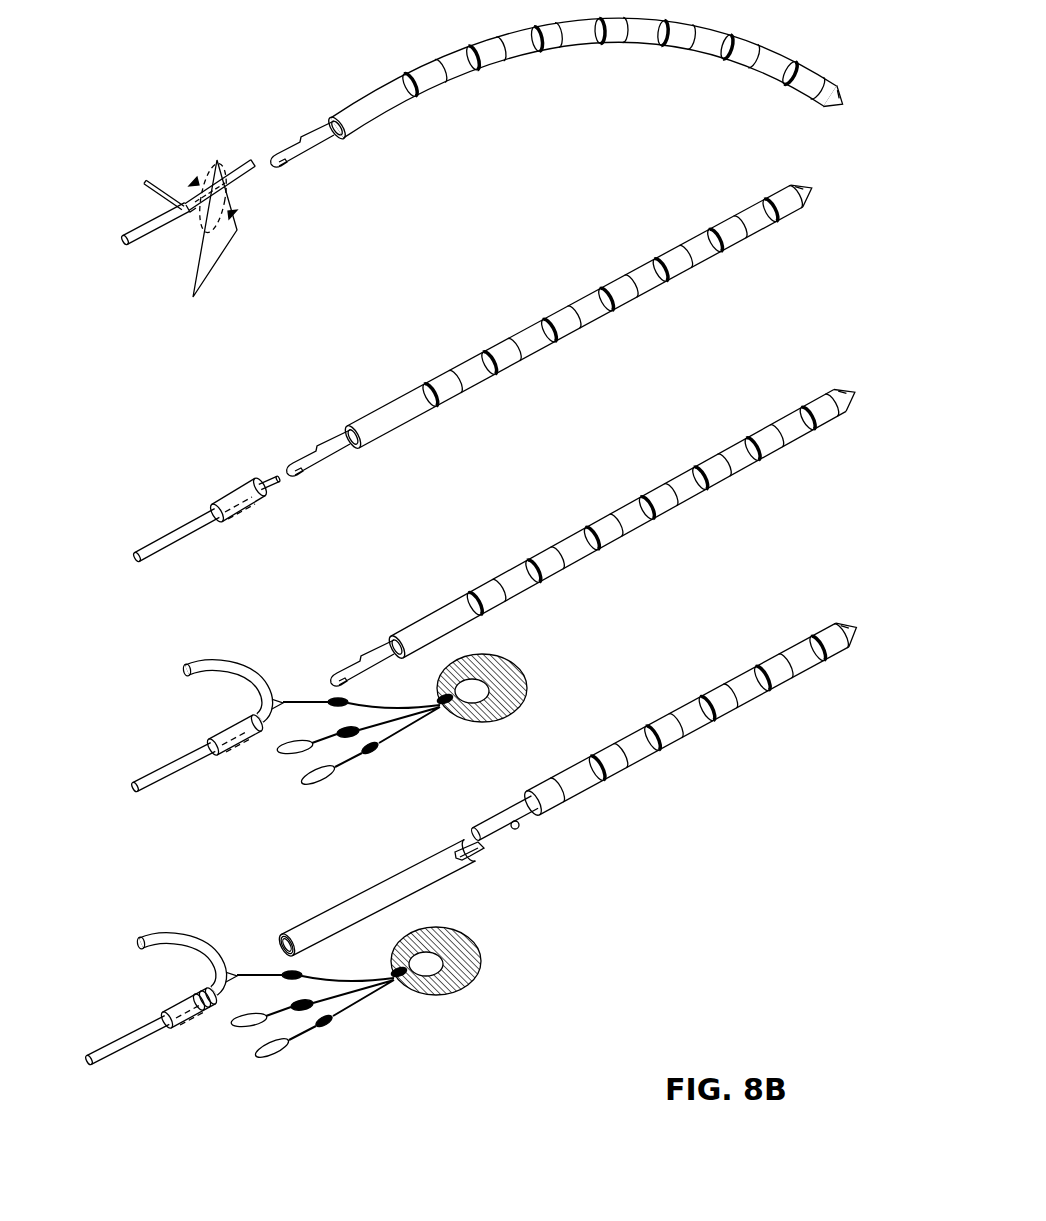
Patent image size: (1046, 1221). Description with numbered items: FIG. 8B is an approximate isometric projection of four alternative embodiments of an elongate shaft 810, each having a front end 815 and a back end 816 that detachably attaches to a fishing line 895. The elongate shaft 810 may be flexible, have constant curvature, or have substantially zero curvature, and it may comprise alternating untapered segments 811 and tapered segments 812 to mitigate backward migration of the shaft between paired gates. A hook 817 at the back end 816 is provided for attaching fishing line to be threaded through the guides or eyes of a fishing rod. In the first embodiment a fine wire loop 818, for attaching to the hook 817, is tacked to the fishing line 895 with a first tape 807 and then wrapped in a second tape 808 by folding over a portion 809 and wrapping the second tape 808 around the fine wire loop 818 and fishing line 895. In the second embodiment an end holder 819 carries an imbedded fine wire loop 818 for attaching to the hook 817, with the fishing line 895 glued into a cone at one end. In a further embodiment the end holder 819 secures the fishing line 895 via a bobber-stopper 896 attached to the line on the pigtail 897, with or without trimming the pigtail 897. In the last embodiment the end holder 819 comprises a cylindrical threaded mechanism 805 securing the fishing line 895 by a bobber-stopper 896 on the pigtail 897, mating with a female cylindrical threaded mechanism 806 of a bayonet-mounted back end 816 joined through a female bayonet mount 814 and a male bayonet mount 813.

The cylindrical threaded mechanism 805 is at (187, 993).
The female cylindrical threaded mechanism 806 is at (273, 937).
The first tape 807 is at (143, 180).
The second tape 808 is at (220, 250).
The folded-over portion 809 is at (213, 160).
The elongate shaft 810 is at (648, 917).
The untapered segments 811 is at (637, 43).
The tapered segments 812 is at (547, 57).
The male bayonet mount 813 is at (523, 827).
The female bayonet mount 814 is at (473, 857).
The front end 815 is at (820, 93).
The back end 816 is at (388, 110).
The hook 817 is at (308, 128).
The fine wire loop 818 is at (257, 170).
The end holder 819 is at (257, 507).
The fishing line 895 is at (127, 233).
The bobber-stopper 896 is at (333, 697).
The pigtail 897 is at (197, 662).